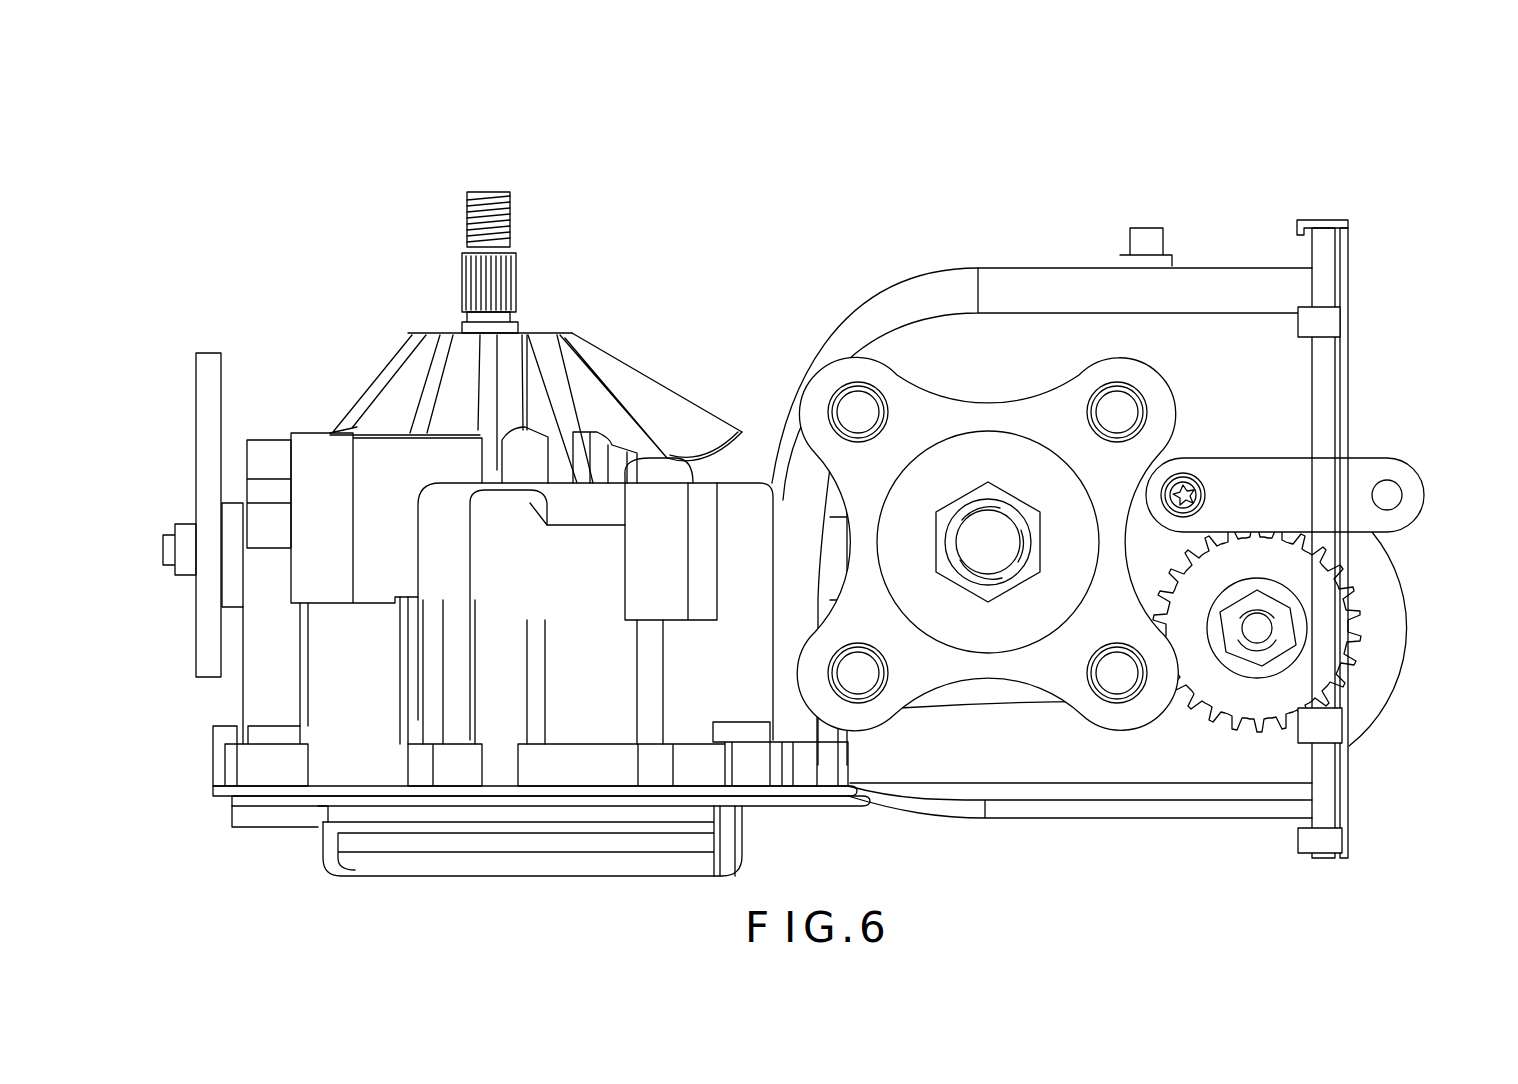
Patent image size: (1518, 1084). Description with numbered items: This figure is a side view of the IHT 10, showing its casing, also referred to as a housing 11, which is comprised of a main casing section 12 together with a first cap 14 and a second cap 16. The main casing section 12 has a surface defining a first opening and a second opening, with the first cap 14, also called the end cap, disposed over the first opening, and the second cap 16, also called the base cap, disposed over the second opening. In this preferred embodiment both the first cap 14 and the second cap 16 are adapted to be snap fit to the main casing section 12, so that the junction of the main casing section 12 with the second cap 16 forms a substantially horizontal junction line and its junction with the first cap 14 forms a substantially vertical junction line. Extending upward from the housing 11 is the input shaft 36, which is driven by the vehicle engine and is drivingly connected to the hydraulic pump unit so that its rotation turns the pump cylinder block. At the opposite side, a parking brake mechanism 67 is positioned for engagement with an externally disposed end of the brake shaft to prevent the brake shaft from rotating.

The IHT 10 is at (674, 146).
The housing 11 is at (771, 324).
The main casing section 12 is at (892, 300).
The first cap 14 is at (1335, 262).
The second cap 16 is at (340, 855).
The input shaft 36 is at (478, 290).
The parking brake mechanism 67 is at (1372, 579).